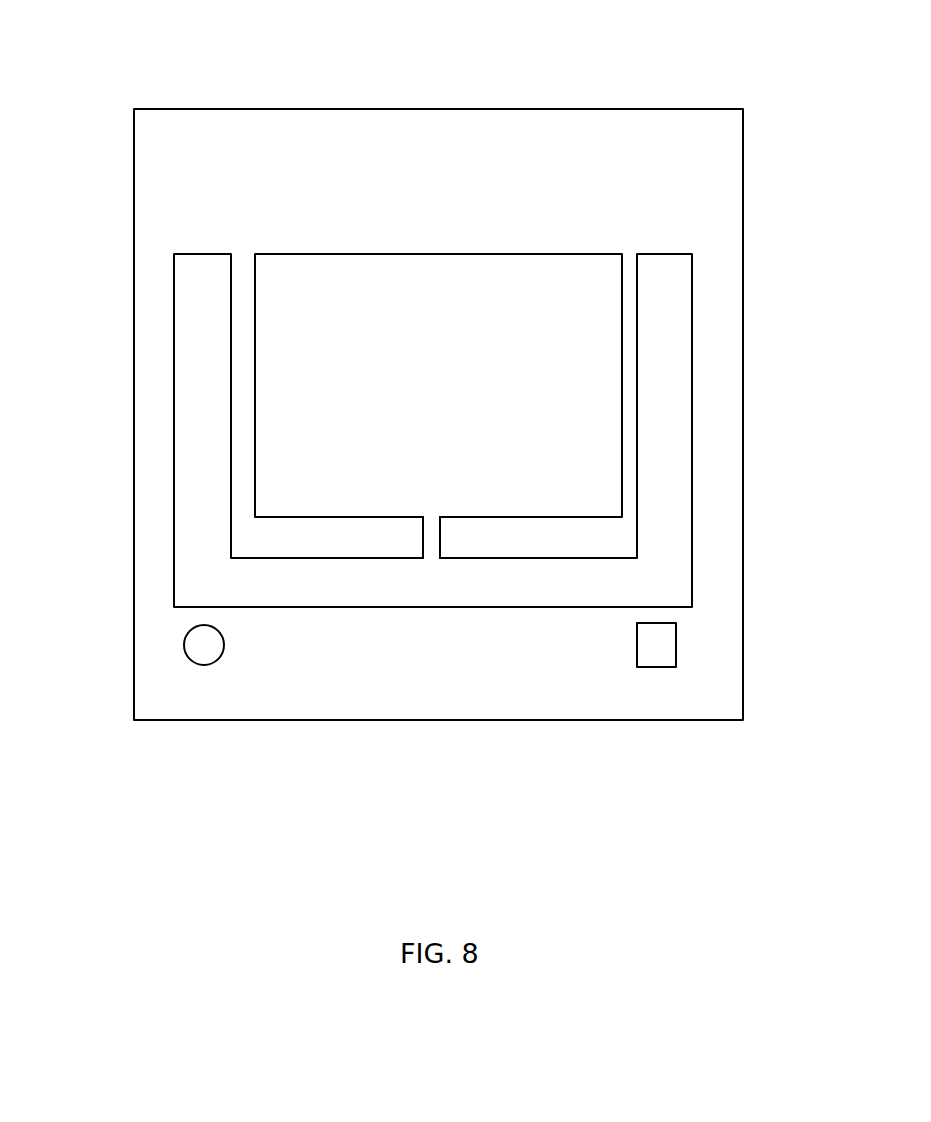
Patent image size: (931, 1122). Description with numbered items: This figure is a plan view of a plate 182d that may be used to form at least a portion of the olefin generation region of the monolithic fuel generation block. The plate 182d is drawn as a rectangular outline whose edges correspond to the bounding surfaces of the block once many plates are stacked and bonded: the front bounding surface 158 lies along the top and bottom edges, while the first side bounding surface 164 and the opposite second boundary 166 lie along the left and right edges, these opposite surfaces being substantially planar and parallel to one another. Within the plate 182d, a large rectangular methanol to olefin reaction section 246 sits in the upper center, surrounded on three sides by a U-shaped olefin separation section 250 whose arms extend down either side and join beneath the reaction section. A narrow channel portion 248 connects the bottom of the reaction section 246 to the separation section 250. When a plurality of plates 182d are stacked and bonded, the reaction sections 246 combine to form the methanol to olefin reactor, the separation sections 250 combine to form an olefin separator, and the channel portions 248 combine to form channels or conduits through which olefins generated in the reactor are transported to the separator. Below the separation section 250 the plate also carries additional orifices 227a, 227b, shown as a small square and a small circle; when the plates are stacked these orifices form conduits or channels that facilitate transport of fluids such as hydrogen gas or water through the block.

The front bounding surface 158 is at (383, 109).
The plate 182d is at (133, 202).
The first side bounding surface 164 is at (134, 382).
The second boundary 166 is at (744, 343).
The methanol to olefin reaction section 246 is at (365, 255).
The channel portion 248 is at (433, 543).
The olefin separation section 250 is at (433, 430).
The orifice 227a is at (639, 642).
The orifice 227b is at (206, 654).